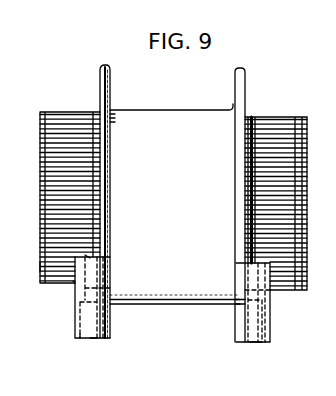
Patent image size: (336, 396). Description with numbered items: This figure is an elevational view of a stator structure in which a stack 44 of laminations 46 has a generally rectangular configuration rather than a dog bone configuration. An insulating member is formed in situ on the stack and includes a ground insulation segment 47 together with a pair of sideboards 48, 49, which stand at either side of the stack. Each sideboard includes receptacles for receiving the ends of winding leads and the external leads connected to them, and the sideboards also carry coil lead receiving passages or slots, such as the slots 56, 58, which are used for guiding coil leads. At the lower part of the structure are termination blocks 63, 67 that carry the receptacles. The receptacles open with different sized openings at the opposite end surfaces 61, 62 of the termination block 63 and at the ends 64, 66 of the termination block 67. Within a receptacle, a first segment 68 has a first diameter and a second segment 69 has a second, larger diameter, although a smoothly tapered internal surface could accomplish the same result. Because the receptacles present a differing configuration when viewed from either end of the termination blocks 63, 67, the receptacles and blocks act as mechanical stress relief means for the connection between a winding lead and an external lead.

The stack of laminations 44 is at (66, 113).
The sideboard 48 is at (110, 85).
The ground insulation segment 47 is at (175, 110).
The sideboard 49 is at (246, 87).
The end of termination block 64 is at (265, 262).
The end surface of termination block 61 is at (87, 257).
The lamination 46 is at (40, 268).
The first segment 68 is at (73, 283).
The termination block 63 is at (75, 320).
The second segment 69 is at (83, 340).
The end surface of termination block 62 is at (93, 340).
The coil lead receiving passage 56 is at (113, 330).
The coil lead receiving passage 58 is at (240, 327).
The termination block 67 is at (272, 323).
The end of termination block 66 is at (256, 343).